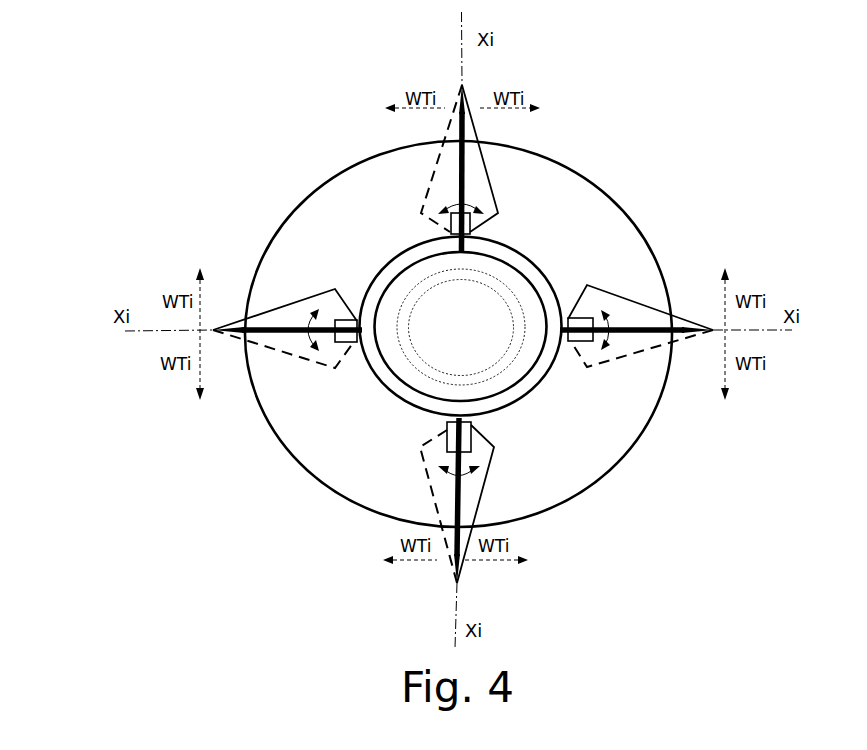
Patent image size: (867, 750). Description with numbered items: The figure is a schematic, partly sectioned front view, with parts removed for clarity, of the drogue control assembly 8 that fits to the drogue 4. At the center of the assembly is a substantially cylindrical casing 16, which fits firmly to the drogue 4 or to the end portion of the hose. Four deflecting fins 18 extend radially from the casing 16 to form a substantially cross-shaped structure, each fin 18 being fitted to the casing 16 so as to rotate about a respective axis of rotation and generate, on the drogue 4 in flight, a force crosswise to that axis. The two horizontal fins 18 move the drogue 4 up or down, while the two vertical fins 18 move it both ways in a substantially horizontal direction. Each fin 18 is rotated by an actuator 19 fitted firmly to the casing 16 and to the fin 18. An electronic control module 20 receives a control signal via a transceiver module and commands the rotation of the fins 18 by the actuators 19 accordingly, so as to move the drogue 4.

The drogue 4 is at (312, 191).
The drogue control assembly 8 is at (650, 195).
The casing 16 is at (363, 365).
The deflecting fin 18 is at (440, 175).
The actuator 19 is at (337, 288).
The electronic control module 20 is at (440, 334).